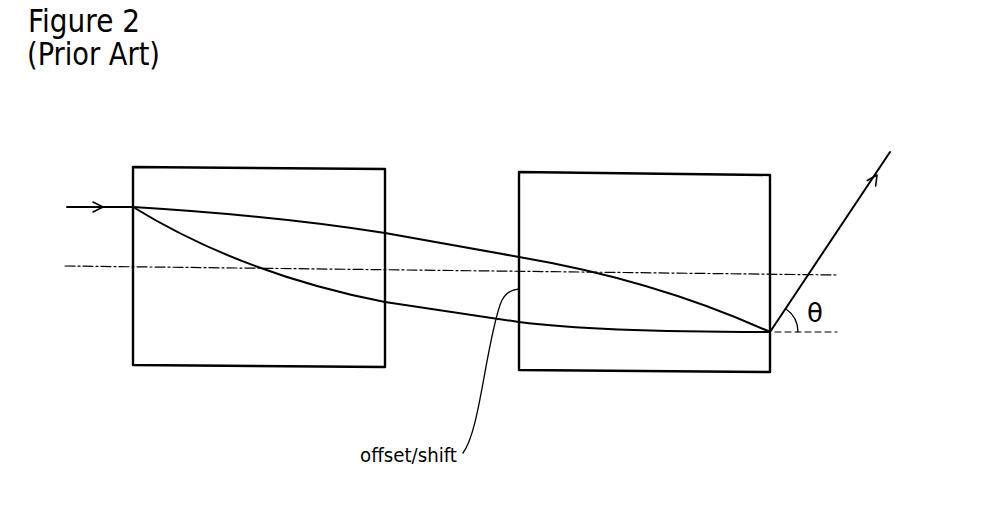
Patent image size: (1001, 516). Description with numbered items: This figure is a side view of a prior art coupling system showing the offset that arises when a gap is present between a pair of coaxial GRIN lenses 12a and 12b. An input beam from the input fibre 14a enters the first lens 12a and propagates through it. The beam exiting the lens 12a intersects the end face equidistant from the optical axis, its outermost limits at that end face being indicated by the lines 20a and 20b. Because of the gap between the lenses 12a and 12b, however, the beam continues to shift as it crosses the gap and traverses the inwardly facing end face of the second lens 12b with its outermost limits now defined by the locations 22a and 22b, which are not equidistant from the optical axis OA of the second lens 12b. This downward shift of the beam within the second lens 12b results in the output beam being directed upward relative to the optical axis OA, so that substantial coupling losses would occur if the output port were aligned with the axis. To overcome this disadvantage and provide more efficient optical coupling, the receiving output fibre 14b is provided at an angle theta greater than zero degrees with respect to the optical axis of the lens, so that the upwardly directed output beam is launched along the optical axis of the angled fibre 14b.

The input optical fibre 14a is at (86, 203).
The first GRIN lens 12a is at (196, 167).
The outermost beam limit at lens 12a end face 20a is at (388, 235).
The outermost beam limit at lens 12a end face 20b is at (387, 304).
The second GRIN lens 12b is at (650, 172).
The outermost beam limit location on lens 12b end face 22a is at (519, 257).
The outermost beam limit location on lens 12b end face 22b is at (512, 327).
The output optical fibre 14b is at (853, 205).
The optical axis OA is at (82, 268).